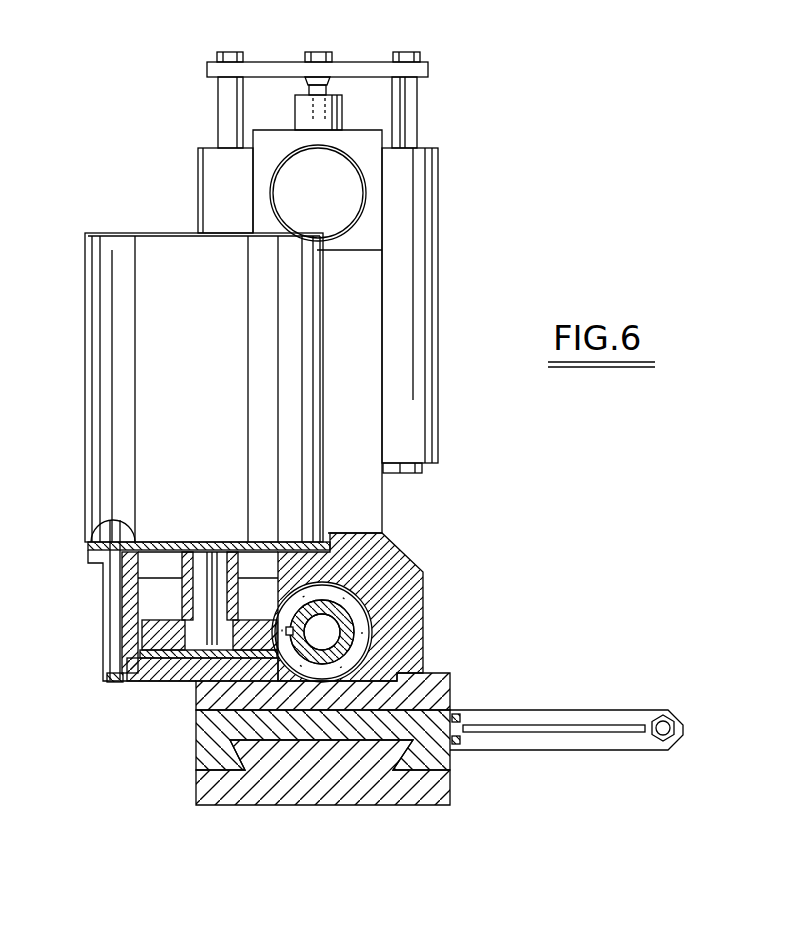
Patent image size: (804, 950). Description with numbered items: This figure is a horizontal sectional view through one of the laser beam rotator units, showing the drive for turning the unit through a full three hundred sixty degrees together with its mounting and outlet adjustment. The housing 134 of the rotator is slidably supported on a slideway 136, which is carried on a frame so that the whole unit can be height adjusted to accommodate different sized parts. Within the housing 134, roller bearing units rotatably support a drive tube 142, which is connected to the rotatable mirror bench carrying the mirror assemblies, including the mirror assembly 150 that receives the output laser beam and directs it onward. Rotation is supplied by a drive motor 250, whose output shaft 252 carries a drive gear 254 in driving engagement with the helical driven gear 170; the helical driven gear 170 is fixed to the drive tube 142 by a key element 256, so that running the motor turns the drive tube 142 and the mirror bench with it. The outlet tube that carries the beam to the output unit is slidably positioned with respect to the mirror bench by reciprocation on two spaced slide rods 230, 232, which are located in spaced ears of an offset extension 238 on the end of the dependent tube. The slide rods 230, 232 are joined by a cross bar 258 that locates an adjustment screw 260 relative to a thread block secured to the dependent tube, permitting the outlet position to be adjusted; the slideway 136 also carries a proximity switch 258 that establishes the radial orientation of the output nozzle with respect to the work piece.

The cross bar 258 is at (267, 62).
The adjustment screw 260 is at (328, 78).
The slide rod 232 is at (220, 105).
The slide rod 230 is at (413, 100).
The mirror assembly 150 is at (332, 190).
The offset extension 238 is at (415, 282).
The drive motor 250 is at (100, 335).
The output shaft 252 is at (212, 567).
The drive gear 254 is at (160, 637).
The key element 256 is at (343, 612).
The drive tube 142 is at (345, 613).
The helical driven gear 170 is at (362, 632).
The housing 134 is at (420, 685).
The slideway 136 is at (435, 783).